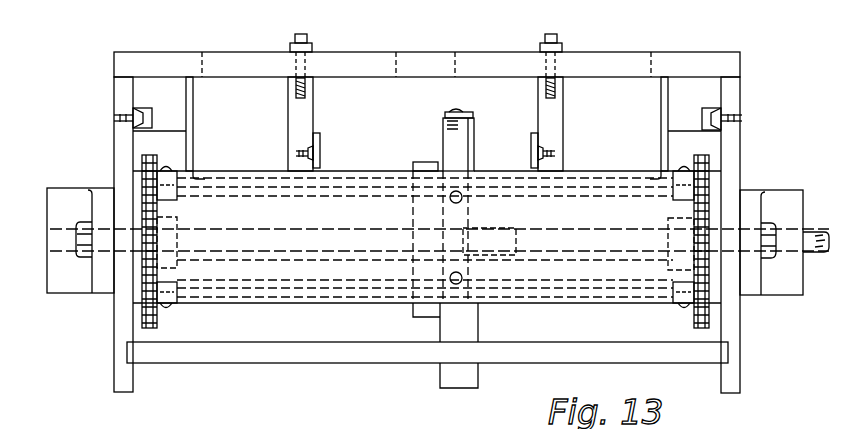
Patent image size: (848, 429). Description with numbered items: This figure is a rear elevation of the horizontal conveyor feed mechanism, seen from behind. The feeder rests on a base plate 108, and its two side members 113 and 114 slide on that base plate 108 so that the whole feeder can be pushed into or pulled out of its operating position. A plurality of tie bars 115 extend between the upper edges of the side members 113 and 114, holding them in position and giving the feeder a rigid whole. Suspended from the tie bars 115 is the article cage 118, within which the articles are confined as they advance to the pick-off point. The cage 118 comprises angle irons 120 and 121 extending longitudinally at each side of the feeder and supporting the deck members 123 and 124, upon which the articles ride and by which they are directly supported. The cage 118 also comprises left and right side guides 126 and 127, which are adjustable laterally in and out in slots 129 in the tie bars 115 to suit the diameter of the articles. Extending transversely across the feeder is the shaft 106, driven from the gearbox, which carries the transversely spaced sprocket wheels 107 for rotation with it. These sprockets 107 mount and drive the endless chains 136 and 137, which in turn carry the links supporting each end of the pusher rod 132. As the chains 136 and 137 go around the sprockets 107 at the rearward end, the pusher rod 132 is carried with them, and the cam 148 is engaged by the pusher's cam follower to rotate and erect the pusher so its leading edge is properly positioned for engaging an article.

The shaft 106 is at (569, 225).
The sprocket wheel 107 is at (140, 323).
The base plate 108 is at (289, 363).
The side member 113 is at (113, 127).
The side member 114 is at (740, 140).
The tie bar 115 is at (372, 70).
The article cage 118 is at (414, 113).
The angle iron 120 is at (668, 114).
The angle iron 121 is at (194, 107).
The deck member 123 is at (623, 170).
The deck member 124 is at (380, 148).
The left side guide 126 is at (305, 110).
The right side guide 127 is at (560, 110).
The slot 129 is at (340, 68).
The pusher rod 132 is at (298, 283).
The chain 136 is at (150, 331).
The chain 137 is at (694, 331).
The cam 148 is at (465, 205).